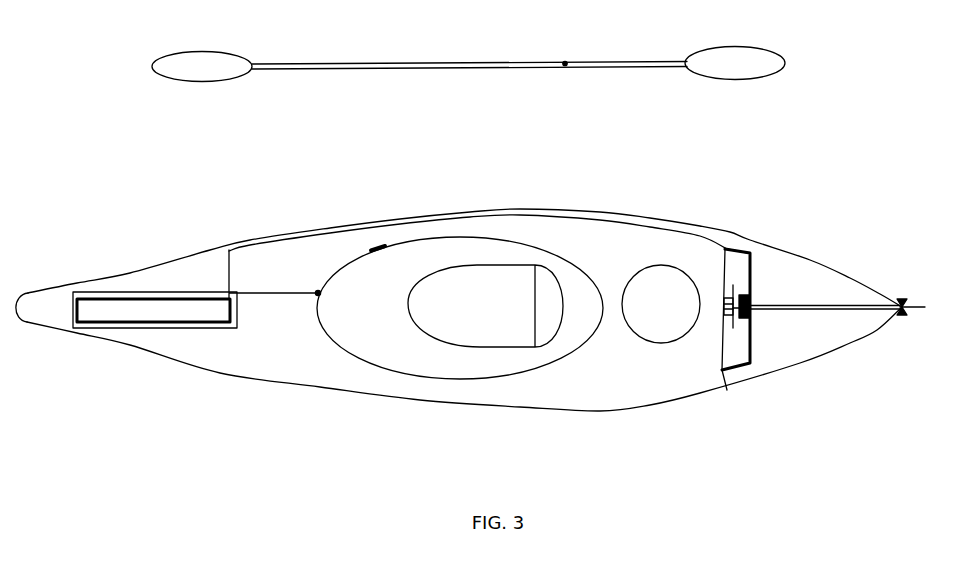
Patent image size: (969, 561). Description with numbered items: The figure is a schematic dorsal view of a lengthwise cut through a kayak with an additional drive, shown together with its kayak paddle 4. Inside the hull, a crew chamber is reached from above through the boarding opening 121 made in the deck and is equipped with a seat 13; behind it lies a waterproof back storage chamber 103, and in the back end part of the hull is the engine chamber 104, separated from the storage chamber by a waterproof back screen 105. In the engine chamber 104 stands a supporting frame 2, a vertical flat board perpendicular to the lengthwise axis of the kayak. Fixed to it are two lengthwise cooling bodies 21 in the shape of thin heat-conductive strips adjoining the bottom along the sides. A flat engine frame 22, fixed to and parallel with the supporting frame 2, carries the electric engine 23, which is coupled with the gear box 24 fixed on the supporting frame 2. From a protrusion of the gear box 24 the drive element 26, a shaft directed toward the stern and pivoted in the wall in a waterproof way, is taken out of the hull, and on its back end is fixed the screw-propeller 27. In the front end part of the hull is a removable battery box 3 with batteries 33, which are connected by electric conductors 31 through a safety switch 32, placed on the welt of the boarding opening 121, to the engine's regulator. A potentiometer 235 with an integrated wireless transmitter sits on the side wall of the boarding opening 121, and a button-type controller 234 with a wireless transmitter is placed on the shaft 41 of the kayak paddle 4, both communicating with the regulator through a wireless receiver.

The supporting frame 2 is at (792, 322).
The battery box 3 is at (132, 322).
The kayak paddle 4 is at (488, 103).
The seat 13 is at (460, 320).
The cooling bodies 21 is at (742, 373).
The engine frame 22 is at (725, 292).
The electric engine 23 is at (722, 310).
The gear box 24 is at (744, 288).
The drive element 26 is at (824, 310).
The screw-propeller 27 is at (902, 300).
The electric conductors 31 is at (222, 270).
The safety switch 32 is at (318, 291).
The batteries 33 is at (108, 308).
The shaft 41 is at (447, 65).
The back storage chamber 103 is at (643, 296).
The engine chamber 104 is at (731, 263).
The back screen 105 is at (716, 366).
The boarding opening 121 is at (412, 263).
The controller 234 is at (566, 65).
The potentiometer 235 is at (371, 240).